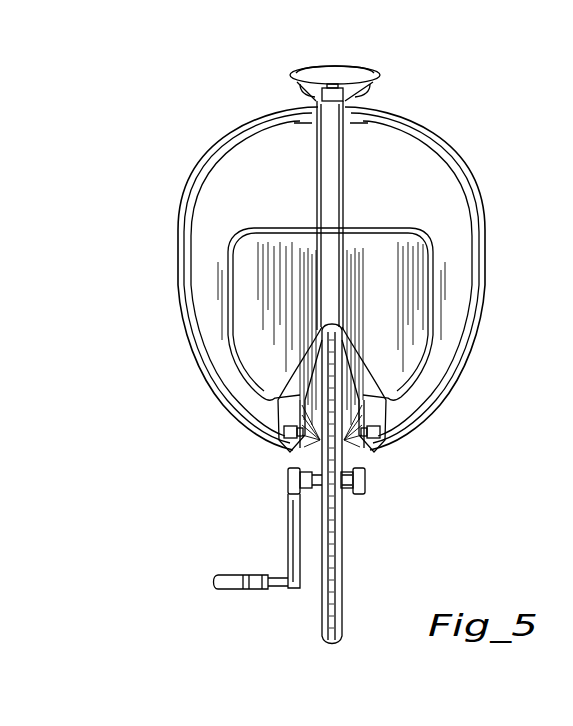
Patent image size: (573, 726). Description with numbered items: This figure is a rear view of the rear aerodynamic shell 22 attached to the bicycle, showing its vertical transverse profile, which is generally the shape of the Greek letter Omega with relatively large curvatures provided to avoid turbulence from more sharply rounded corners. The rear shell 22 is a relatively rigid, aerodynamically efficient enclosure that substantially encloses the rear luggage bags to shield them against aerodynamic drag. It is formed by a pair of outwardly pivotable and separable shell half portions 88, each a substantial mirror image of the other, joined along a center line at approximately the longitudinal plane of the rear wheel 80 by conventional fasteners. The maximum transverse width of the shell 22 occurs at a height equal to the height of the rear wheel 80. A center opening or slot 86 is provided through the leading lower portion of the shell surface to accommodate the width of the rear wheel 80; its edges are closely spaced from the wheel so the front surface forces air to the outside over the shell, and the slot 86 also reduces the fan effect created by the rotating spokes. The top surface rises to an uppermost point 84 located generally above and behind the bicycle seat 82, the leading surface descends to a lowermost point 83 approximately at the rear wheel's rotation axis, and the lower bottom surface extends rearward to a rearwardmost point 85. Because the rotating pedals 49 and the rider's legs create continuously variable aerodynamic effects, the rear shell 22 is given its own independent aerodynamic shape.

The rear aerodynamic shell 22 is at (507, 187).
The shell half portion 88 is at (186, 248).
The bicycle seat 82 is at (363, 73).
The uppermost point 84 is at (302, 99).
The rear wheel 80 is at (336, 601).
The rearwardmost point 85 is at (266, 397).
The center opening or slot 86 is at (284, 434).
The lowermost point 83 is at (290, 468).
The pedals 49 is at (248, 590).